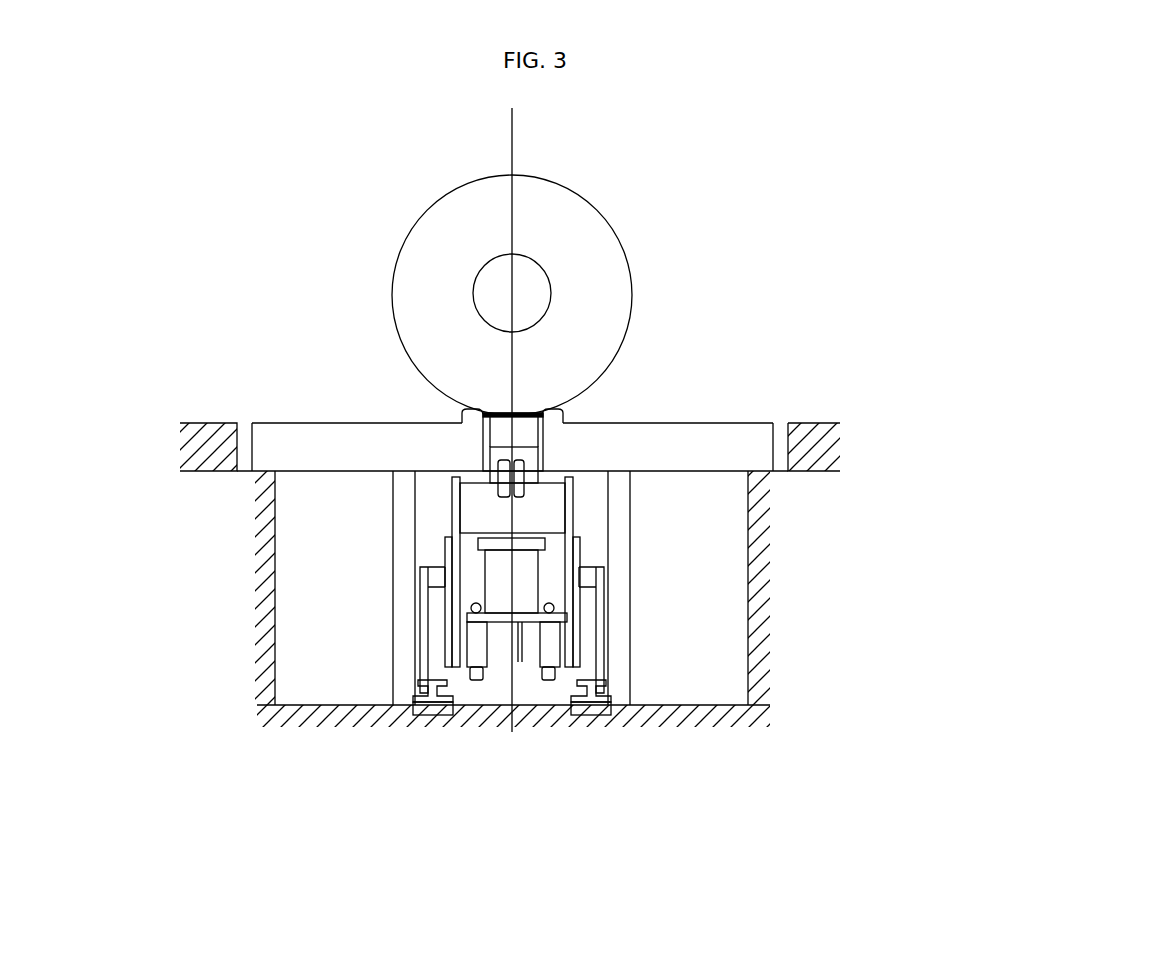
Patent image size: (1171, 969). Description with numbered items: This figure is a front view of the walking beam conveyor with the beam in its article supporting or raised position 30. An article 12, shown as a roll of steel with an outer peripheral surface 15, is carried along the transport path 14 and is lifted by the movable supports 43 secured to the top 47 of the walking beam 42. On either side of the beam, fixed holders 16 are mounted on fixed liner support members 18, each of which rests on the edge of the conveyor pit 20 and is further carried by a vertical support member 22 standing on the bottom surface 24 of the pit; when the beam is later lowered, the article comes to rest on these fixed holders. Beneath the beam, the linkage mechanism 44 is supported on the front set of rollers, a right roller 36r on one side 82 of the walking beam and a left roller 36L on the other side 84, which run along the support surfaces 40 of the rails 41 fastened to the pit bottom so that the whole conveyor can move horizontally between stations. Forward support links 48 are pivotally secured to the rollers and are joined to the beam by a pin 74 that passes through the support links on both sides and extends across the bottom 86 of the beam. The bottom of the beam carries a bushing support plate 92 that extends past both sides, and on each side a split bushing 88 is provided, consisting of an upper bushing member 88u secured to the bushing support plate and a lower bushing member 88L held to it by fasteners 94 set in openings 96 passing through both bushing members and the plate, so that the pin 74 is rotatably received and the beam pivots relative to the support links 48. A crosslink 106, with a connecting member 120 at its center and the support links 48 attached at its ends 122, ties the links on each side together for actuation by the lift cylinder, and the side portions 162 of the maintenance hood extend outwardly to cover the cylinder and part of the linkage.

The article 12 is at (563, 185).
The transport path 14 is at (512, 140).
The outer peripheral surface 15 is at (630, 262).
The fixed holder 16 is at (466, 420).
The fixed liner support member 18 is at (283, 423).
The conveyor pit 20 is at (337, 533).
The vertical support member 22 is at (440, 590).
The bottom surface 24 is at (262, 705).
The raised position 30 is at (435, 512).
The left roller 36L is at (285, 677).
The right roller 36r is at (600, 590).
The support surface 40 is at (637, 635).
The rail 41 is at (603, 717).
The walking beam 42 is at (497, 430).
The movable support 43 is at (488, 410).
The linkage mechanism 44 is at (620, 575).
The top of the beam 47 is at (514, 412).
The forward support link 48 is at (337, 533).
The pin 74 is at (517, 662).
The side of the walking beam 82 is at (640, 637).
The other side of the walking beam 84 is at (478, 628).
The bottom of the beam 86 is at (527, 625).
The split bushing 88 is at (532, 627).
The lower bushing member 88L is at (475, 660).
The upper bushing member 88u is at (445, 655).
The bushing support plate 92 is at (620, 583).
The fastener 94 is at (473, 680).
The opening 96 is at (640, 720).
The crosslink 106 is at (788, 470).
The connecting member 120 is at (237, 470).
The ends of the cross link 122 is at (332, 471).
The side portion 162 is at (428, 423).